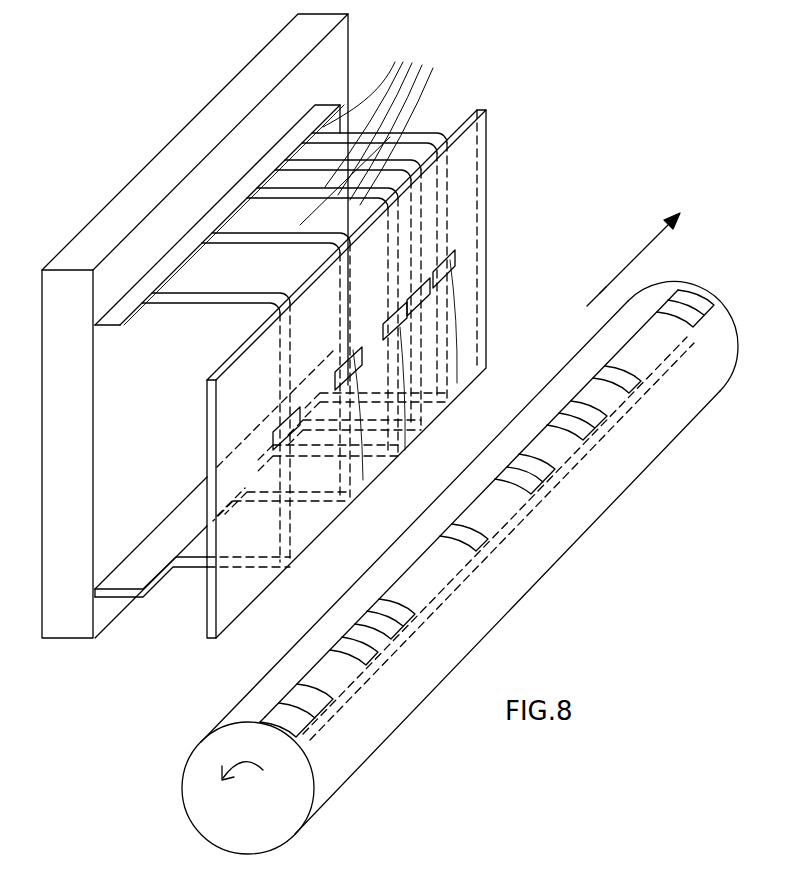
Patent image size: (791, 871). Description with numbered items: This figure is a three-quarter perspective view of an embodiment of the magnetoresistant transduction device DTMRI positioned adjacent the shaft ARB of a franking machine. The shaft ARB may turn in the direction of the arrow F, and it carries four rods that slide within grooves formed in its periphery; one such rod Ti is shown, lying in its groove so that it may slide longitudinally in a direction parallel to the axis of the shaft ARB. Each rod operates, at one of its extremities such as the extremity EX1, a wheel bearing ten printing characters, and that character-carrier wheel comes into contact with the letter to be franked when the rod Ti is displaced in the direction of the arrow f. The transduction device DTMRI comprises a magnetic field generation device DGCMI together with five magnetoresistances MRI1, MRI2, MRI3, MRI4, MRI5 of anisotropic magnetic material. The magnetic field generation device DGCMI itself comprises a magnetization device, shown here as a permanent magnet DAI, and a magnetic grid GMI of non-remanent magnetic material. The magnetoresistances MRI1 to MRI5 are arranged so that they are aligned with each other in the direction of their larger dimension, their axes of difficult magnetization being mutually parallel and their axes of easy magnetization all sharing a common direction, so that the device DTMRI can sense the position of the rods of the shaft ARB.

The permanent magnet DAI is at (84, 229).
The magnetic field generation device DGCMI is at (156, 610).
The transduction device DTMRI is at (283, 600).
The magnetic grid GMI is at (378, 256).
The magnetoresistance MRI1 is at (292, 549).
The magnetoresistance MRI2 is at (352, 485).
The magnetoresistance MRI3 is at (400, 444).
The magnetoresistance MRI4 is at (427, 414).
The magnetoresistance MRI5 is at (455, 382).
The shaft ARB is at (610, 497).
The extremity EX1 is at (276, 762).
The arrow F is at (242, 782).
The rod Ti is at (633, 259).
The arrow f is at (598, 283).